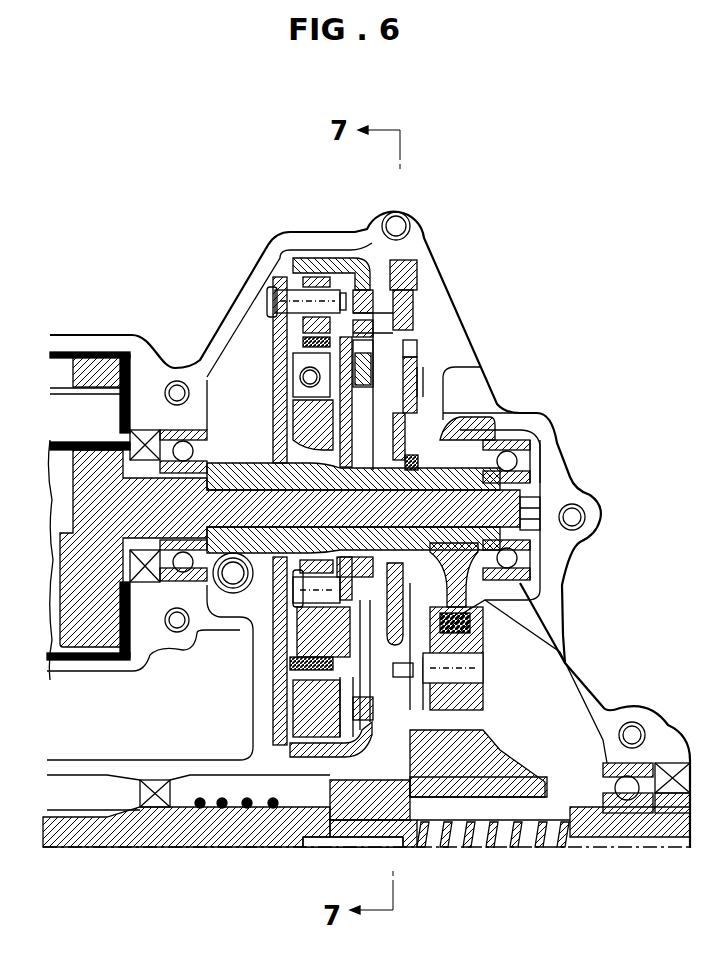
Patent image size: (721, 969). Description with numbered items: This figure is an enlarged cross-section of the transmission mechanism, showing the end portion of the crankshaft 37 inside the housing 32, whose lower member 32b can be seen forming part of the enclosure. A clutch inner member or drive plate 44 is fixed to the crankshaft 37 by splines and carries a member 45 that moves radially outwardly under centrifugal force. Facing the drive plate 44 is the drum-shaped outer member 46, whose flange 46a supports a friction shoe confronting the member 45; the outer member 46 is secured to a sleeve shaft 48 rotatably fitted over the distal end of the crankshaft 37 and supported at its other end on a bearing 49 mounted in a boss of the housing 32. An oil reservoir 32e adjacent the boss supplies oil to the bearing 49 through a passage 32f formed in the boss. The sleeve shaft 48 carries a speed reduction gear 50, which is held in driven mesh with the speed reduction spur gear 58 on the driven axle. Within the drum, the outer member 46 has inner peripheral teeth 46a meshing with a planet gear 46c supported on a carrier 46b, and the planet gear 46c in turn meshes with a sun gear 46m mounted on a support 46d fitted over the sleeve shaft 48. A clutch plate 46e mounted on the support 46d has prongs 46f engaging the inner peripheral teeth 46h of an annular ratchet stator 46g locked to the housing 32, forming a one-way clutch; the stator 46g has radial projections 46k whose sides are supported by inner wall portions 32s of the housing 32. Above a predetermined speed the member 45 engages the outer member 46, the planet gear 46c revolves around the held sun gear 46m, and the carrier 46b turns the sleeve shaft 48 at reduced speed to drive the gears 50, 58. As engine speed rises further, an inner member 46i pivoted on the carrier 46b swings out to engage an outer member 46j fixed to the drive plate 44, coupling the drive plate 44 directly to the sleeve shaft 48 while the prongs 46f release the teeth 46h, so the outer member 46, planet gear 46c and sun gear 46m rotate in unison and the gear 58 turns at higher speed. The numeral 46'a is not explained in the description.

The housing 32 is at (82, 334).
The inner wall portions 32s is at (400, 250).
The oil reservoir 32e is at (450, 388).
The passage 32f is at (507, 423).
The lower member 32b is at (572, 660).
The crankshaft 37 is at (88, 482).
The drive plate 44 is at (278, 352).
The member 45 is at (293, 297).
The drum-shaped outer member 46 is at (333, 464).
The flange 46a is at (317, 260).
The clutch drum portion 46'a is at (427, 301).
The carrier 46b is at (340, 398).
The planet gear 46c is at (413, 327).
The support 46d is at (370, 490).
The clutch plate 46e is at (468, 415).
The prongs 46f is at (420, 353).
The annular ratchet stator 46g is at (413, 290).
The inner peripheral teeth 46h is at (403, 341).
The inner member 46i is at (300, 643).
The outer member 46j is at (297, 670).
The projections 46k is at (407, 747).
The sun gear 46m is at (397, 433).
The sleeve shaft 48 is at (300, 433).
The bearing 49 is at (520, 560).
The speed reduction gear 50 is at (470, 466).
The speed reduction spur gear 58 is at (473, 607).